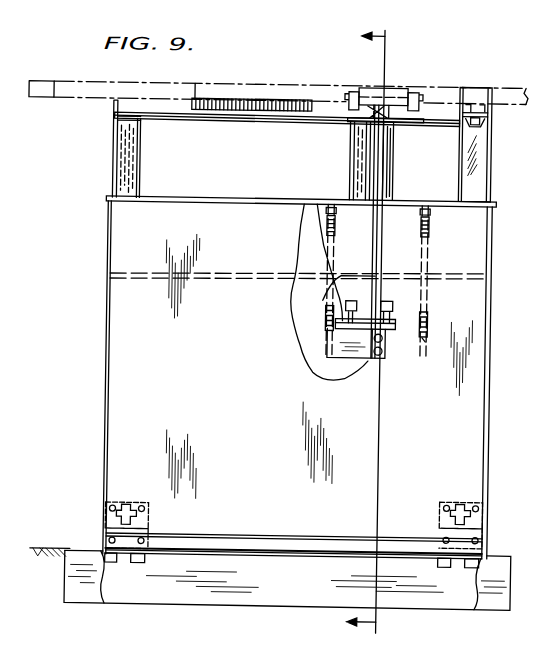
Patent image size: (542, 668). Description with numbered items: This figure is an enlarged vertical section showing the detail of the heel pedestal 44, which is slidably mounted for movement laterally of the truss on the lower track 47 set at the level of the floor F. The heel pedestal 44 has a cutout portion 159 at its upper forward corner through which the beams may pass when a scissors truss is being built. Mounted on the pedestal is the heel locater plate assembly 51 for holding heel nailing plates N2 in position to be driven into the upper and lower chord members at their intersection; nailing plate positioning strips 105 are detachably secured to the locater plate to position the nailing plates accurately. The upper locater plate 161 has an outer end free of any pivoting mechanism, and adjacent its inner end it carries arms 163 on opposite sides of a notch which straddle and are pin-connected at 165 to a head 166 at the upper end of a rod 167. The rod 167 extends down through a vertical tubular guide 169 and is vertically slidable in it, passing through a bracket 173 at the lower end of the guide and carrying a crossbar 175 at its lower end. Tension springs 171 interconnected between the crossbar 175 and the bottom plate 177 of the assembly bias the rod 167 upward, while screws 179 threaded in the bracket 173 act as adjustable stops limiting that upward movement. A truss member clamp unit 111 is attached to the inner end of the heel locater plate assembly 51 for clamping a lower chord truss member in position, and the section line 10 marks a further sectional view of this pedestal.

The section line 10- 10 is at (380, 331).
The nailing plate positioning strips 105 is at (179, 110).
The upper locater plate 161 is at (164, 120).
The heel nailing plates N2 is at (244, 109).
The heel locater plate assembly 51 is at (101, 159).
The arms 163 is at (346, 89).
The head 166 is at (397, 87).
The pin connection 165 is at (423, 98).
The rod 167 is at (385, 111).
The vertical tubular guide 169 is at (390, 159).
The truss member clamp unit 111 is at (491, 160).
The heel pedestal 44 is at (106, 341).
The cutout portion 159 is at (228, 273).
The tension springs 171 is at (326, 311).
The bottom plate 177 is at (303, 208).
The screws 179 is at (378, 296).
The bracket 173 is at (337, 322).
The crossbar 175 is at (331, 352).
The floor F is at (57, 552).
The lower track 47 is at (261, 596).